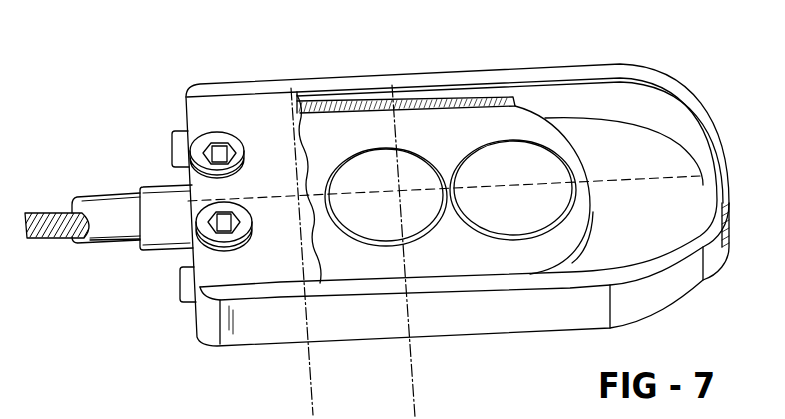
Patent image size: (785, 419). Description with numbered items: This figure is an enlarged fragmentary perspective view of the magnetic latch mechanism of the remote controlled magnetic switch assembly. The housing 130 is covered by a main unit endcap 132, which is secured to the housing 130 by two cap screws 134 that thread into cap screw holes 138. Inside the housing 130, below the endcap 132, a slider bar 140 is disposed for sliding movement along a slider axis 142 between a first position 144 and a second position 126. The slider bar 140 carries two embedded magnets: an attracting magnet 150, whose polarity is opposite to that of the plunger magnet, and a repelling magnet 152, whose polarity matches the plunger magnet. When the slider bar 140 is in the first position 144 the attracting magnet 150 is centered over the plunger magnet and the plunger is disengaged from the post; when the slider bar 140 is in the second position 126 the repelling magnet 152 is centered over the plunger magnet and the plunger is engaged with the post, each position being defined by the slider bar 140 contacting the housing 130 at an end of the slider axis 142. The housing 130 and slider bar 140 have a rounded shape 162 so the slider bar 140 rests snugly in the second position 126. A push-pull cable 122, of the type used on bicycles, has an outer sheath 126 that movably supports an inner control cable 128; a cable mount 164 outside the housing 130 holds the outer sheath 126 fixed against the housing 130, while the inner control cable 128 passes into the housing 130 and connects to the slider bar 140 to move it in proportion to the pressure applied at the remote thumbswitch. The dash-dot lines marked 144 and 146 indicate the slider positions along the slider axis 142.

The push-pull cable 122 is at (107, 190).
The outer sheath 126 is at (100, 242).
The inner control cable 128 is at (52, 212).
The housing 130 is at (525, 317).
The main unit endcap 132 is at (238, 108).
The cap screws 134 is at (214, 135).
The cap screw holes 138 is at (172, 145).
The slider bar 140 is at (456, 140).
The slider axis 142 is at (637, 180).
The first position 144 is at (312, 378).
The second centerline 146 is at (414, 378).
The attracting magnet 150 is at (536, 221).
The repelling magnet 152 is at (391, 220).
The rounded shape 162 is at (712, 120).
The cable mount 164 is at (152, 253).